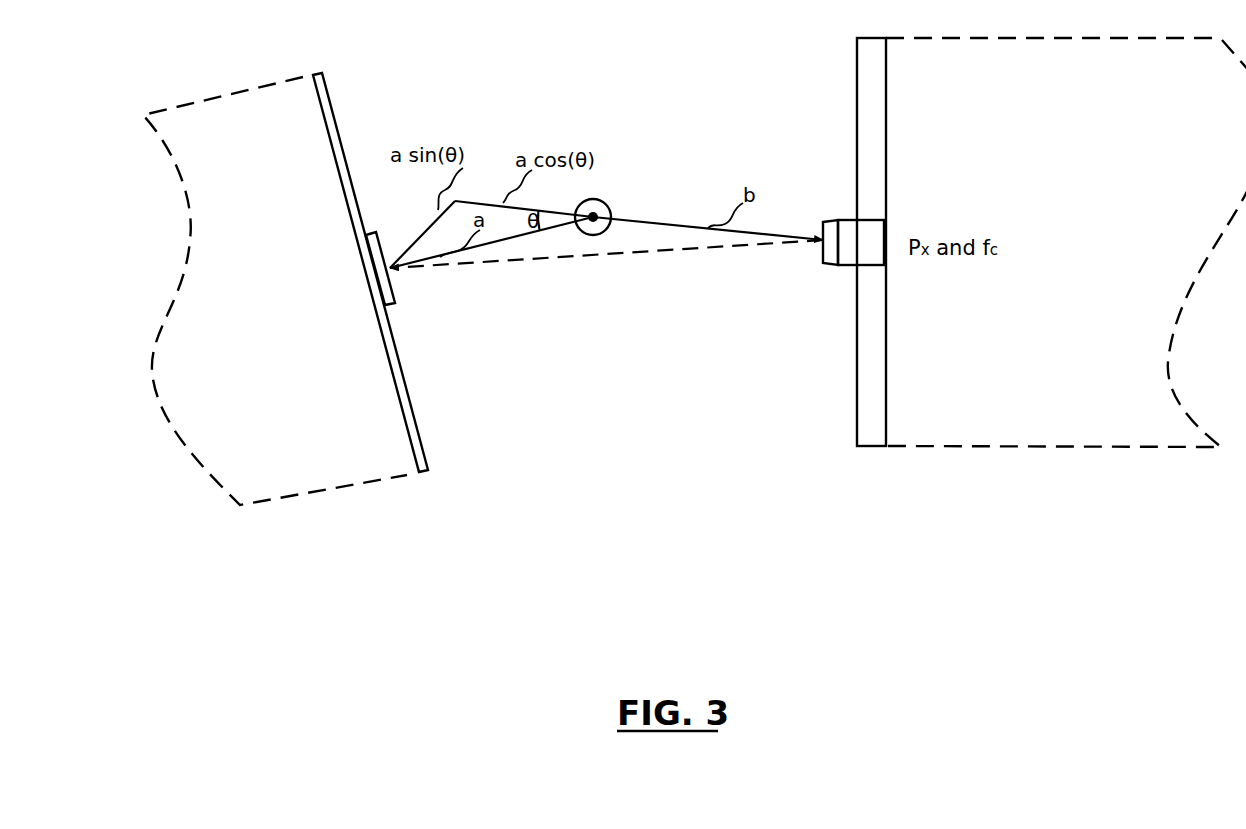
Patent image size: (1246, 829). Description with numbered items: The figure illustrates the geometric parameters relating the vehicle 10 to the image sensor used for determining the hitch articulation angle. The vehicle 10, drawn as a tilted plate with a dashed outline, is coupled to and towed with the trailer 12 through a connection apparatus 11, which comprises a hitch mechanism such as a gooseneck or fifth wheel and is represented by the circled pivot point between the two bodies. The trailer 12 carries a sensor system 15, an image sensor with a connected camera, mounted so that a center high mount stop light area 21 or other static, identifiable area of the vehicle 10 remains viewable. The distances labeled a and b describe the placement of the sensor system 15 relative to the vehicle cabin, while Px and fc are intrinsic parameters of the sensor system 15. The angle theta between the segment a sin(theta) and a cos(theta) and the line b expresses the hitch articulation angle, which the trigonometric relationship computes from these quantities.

The vehicle 10 is at (277, 309).
The connection apparatus 11 is at (602, 193).
The trailer 12 is at (1052, 192).
The sensor system 15 is at (883, 220).
The center high mount stop light (CHMSL) area 21 is at (395, 285).